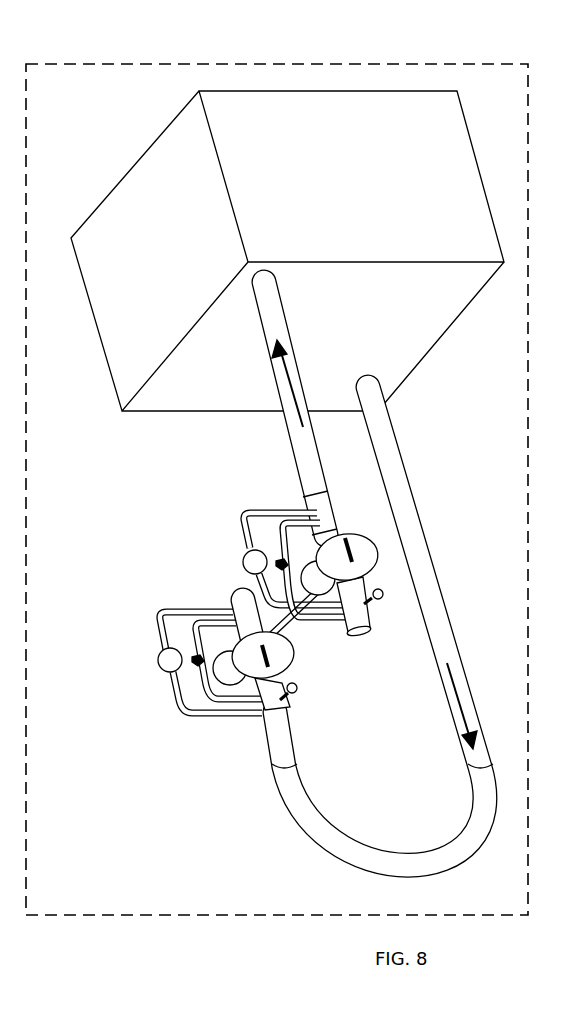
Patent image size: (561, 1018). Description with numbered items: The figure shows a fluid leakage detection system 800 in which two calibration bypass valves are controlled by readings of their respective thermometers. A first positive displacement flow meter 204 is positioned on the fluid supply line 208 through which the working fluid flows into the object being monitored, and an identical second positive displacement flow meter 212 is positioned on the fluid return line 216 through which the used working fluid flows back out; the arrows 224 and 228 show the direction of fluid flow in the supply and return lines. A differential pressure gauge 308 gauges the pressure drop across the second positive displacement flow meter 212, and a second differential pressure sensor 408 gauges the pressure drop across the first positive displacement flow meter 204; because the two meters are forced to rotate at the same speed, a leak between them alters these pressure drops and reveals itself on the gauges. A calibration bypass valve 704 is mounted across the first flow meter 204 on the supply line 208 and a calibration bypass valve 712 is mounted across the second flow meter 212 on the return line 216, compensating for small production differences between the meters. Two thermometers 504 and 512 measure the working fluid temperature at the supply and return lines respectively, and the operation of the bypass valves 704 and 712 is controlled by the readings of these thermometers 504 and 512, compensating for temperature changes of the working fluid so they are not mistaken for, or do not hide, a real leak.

The fluid leakage detection system 800 is at (192, 63).
The first positive displacement flow meter 204 is at (375, 558).
The fluid supply line 208 is at (310, 468).
The second positive displacement flow meter 212 is at (283, 657).
The fluid return line 216 is at (414, 512).
The arrow 224 is at (300, 385).
The arrow 228 is at (457, 690).
The differential pressure gauge 308 is at (165, 660).
The second differential pressure sensor 408 is at (252, 566).
The thermometer 504 is at (380, 598).
The thermometer 512 is at (294, 694).
The calibration bypass valve 704 is at (285, 563).
The calibration bypass valve 712 is at (207, 653).